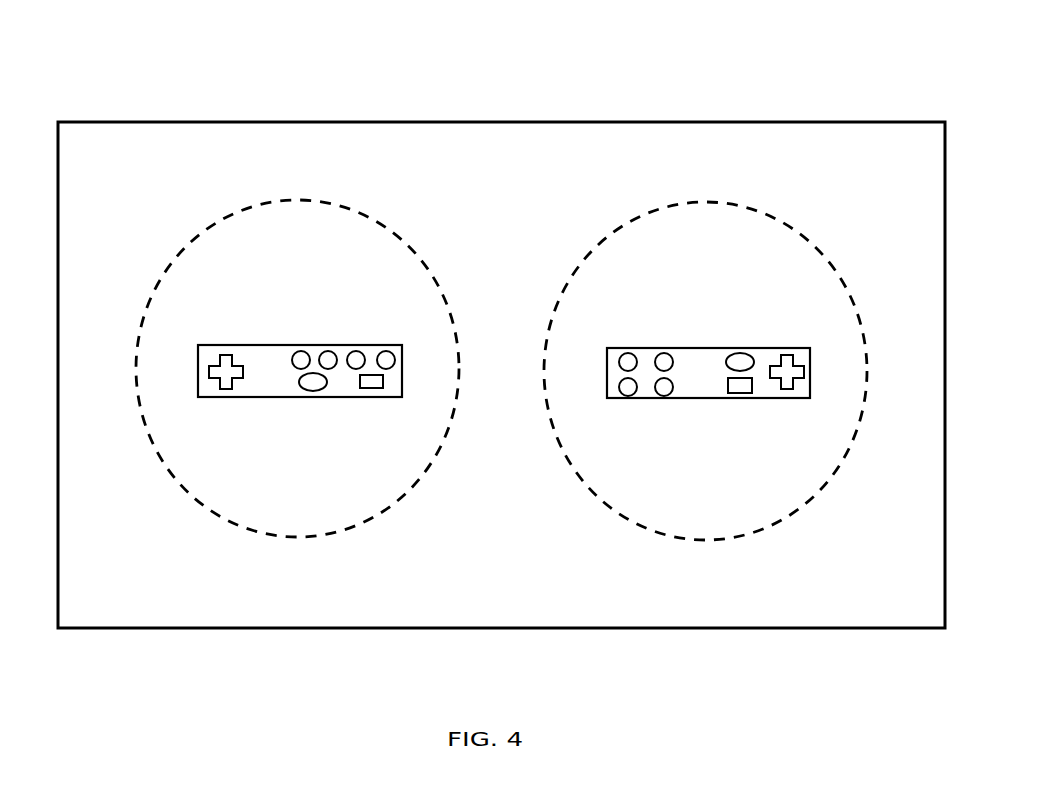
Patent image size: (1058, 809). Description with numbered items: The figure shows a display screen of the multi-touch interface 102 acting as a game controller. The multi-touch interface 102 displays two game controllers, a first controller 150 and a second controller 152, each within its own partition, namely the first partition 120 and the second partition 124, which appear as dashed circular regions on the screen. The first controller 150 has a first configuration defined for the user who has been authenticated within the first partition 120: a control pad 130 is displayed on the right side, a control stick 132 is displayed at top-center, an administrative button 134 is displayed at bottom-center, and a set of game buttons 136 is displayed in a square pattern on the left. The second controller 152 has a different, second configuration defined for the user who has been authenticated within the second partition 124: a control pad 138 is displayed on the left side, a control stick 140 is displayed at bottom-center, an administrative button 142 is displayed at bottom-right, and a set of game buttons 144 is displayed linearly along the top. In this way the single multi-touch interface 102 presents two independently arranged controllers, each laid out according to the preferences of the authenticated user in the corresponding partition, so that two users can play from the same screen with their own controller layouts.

The multi-touch interface 102 is at (652, 116).
The first partition 120 is at (867, 372).
The second partition 124 is at (135, 372).
The control pad 130 is at (798, 362).
The control stick 132 is at (752, 362).
The administrative button 134 is at (738, 395).
The set of game buttons 136 is at (645, 356).
The control pad 138 is at (235, 362).
The control stick 140 is at (328, 384).
The administrative button 142 is at (386, 388).
The set of game buttons 144 is at (342, 346).
The first controller 150 is at (612, 404).
The second controller 152 is at (202, 403).